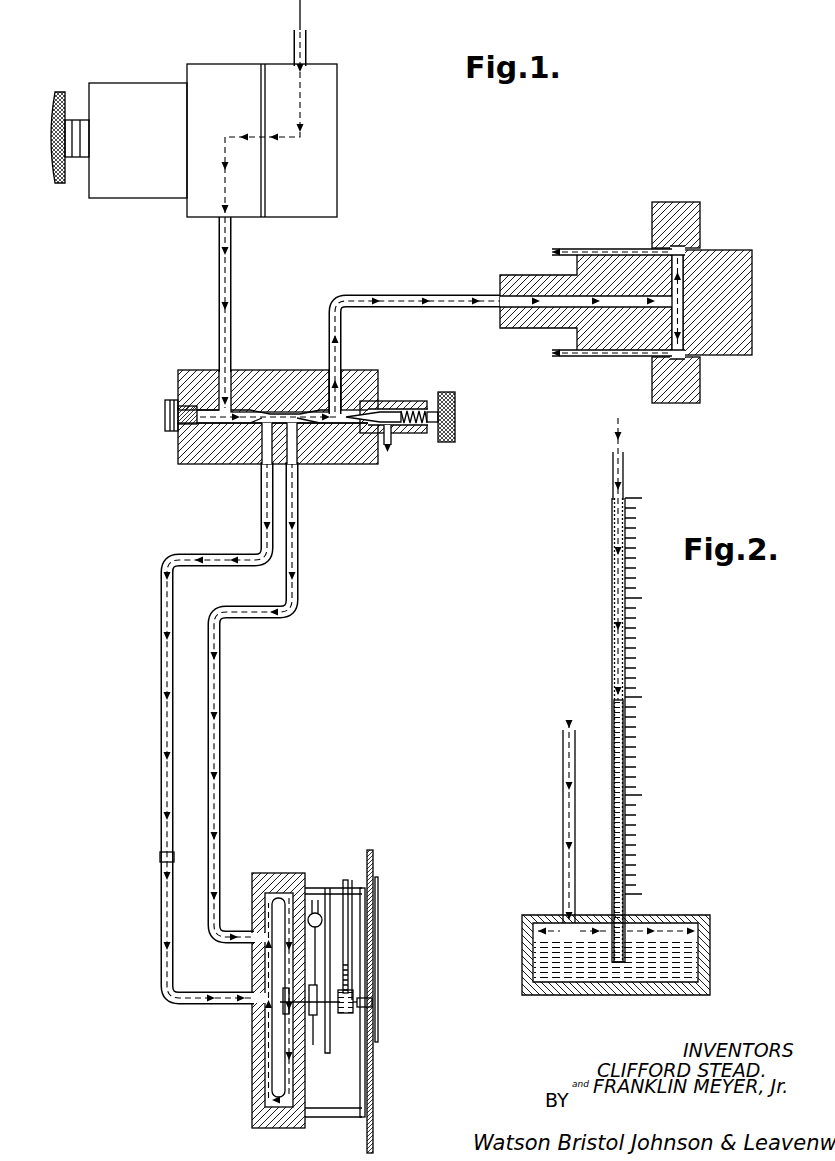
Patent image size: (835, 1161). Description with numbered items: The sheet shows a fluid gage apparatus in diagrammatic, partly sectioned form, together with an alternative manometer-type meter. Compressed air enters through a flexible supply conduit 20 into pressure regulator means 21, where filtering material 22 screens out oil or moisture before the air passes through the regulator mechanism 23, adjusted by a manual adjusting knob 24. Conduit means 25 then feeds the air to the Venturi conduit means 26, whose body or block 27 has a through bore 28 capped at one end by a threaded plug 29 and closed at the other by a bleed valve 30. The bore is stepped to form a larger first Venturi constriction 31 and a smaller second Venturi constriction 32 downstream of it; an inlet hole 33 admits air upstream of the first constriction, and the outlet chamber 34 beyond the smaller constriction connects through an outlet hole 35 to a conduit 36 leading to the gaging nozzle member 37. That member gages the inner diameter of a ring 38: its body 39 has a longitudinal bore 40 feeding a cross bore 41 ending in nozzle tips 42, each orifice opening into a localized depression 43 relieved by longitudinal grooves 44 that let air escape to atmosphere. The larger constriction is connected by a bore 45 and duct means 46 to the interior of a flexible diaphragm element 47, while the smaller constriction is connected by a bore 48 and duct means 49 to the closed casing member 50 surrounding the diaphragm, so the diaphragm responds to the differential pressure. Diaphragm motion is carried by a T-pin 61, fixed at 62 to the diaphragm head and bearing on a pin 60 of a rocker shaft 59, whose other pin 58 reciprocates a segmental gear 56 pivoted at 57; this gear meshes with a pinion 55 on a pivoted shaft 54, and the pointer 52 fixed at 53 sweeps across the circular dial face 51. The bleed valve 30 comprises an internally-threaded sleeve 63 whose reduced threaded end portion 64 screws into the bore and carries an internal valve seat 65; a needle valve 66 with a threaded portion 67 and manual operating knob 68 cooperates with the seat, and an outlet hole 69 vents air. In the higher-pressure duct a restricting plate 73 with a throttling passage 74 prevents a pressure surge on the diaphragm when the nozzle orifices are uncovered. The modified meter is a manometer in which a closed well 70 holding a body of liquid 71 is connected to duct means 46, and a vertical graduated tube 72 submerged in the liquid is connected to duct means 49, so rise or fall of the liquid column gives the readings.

In FIG. 1, the supply conduit 20 is at (308, 52).
In FIG. 1, the pressure regulator means 21 is at (341, 183).
In FIG. 1, the filtering material 22 is at (263, 64).
In FIG. 1, the regulator mechanism 23 is at (184, 78).
In FIG. 1, the manual adjusting knob 24 is at (56, 92).
In FIG. 1, the conduit means 25 is at (233, 265).
In FIG. 1, the Venturi conduit means 26 is at (283, 366).
In FIG. 1, the body or block 27 is at (184, 370).
In FIG. 1, the through bore 28 is at (210, 448).
In FIG. 1, the cap screw or threaded plug 29 is at (172, 420).
In FIG. 1, the bleed valve 30 is at (406, 400).
In FIG. 1, the first Venturi constriction 31 is at (280, 410).
In FIG. 1, the second Venturi constriction 32 is at (300, 410).
In FIG. 1, the inlet bore or hole 33 is at (218, 380).
In FIG. 1, the outlet space or chamber 34 is at (335, 440).
In FIG. 1, the outlet bore or hole 35 is at (352, 378).
In FIG. 1, the duct means or conduit 36 is at (353, 312).
In FIG. 1, the gaging nozzle means or member 37 is at (755, 248).
In FIG. 1, the ring 38 is at (692, 204).
In FIG. 1, the body 39 is at (748, 315).
In FIG. 1, the longitudinally extending bore 40 is at (553, 318).
In FIG. 1, the cross bore 41 is at (683, 300).
In FIG. 1, the nozzle tips 42 is at (672, 246).
In FIG. 1, the localized surrounding depression 43 is at (686, 248).
In FIG. 1, the longitudinally-extending grooves 44 is at (600, 250).
In FIG. 1, the bore 45 is at (265, 455).
In FIG. 1, the duct means 46 is at (172, 553).
In FIG. 2, the duct means 46 is at (563, 816).
In FIG. 1, the flexible diaphragm element 47 is at (285, 895).
In FIG. 1, the bore 48 is at (300, 455).
In FIG. 1, the duct means 49 is at (299, 592).
In FIG. 2, the duct means 49 is at (625, 478).
In FIG. 1, the closed casing member 50 is at (263, 870).
In FIG. 1, the circular dial face 51 is at (373, 856).
In FIG. 1, the indicator arm or pointer 52 is at (378, 885).
In FIG. 1, the pivot 53 is at (375, 1001).
In FIG. 1, the pivoted shaft 54 is at (366, 992).
In FIG. 1, the pinion 55 is at (345, 1013).
In FIG. 1, the segmental gear 56 is at (349, 958).
In FIG. 1, the pivot 57 is at (356, 890).
In FIG. 1, the pin 58 is at (345, 930).
In FIG. 1, the rocker shaft 59 is at (316, 898).
In FIG. 1, the pin 60 is at (328, 1053).
In FIG. 1, the T-pin 61 is at (312, 1050).
In FIG. 1, the fixing point 62 is at (278, 1005).
In FIG. 1, the internally-threaded sleeve 63 is at (416, 436).
In FIG. 1, the externally-threaded end portion 64 is at (368, 440).
In FIG. 1, the valve seat 65 is at (388, 408).
In FIG. 1, the needle valve 66 is at (413, 408).
In FIG. 1, the externally-threaded portion 67 is at (455, 405).
In FIG. 1, the manual operating knob 68 is at (455, 430).
In FIG. 1, the outlet hole 69 is at (398, 446).
In FIG. 2, the closed well 70 is at (710, 920).
In FIG. 2, the body of liquid 71 is at (700, 952).
In FIG. 2, the vertical graduated tube 72 is at (612, 668).
In FIG. 1, the restricting means or plate 73 is at (160, 862).
In FIG. 1, the restricted orifice or throttling passage 74 is at (160, 855).